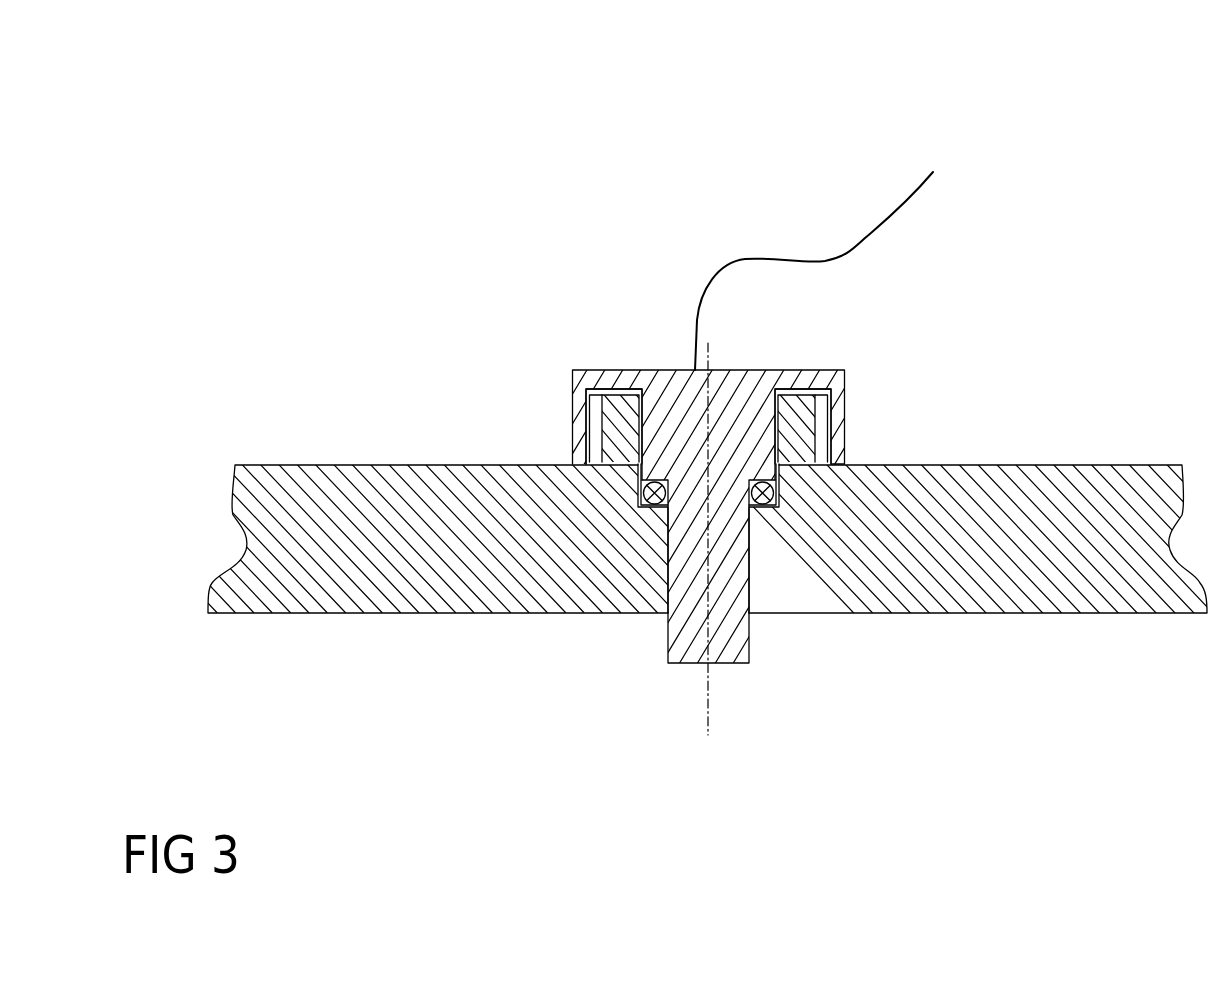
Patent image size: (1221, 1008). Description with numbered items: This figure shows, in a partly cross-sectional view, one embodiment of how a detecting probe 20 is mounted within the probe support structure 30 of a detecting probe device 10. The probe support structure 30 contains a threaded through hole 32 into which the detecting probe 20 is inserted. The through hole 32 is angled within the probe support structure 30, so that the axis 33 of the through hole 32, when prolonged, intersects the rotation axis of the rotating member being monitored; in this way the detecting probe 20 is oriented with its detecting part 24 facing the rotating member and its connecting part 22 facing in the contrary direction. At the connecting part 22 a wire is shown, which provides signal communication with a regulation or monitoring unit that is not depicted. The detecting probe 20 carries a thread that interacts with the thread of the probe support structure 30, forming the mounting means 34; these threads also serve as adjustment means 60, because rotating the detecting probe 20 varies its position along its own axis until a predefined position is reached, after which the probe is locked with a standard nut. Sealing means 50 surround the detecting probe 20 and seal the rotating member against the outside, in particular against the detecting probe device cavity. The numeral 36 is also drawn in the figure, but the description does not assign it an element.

The detecting probe device 10 is at (338, 178).
The detecting probe 20 is at (720, 410).
The connecting part 22 is at (682, 370).
The detecting part 24 is at (707, 665).
The probe support structure 30 is at (1038, 483).
The through hole 32 is at (667, 585).
The axis 33 is at (708, 725).
The mounting means 34 is at (558, 410).
The insert 36 is at (772, 438).
The sealing means 50 is at (774, 492).
The adjustment means 60 is at (546, 450).